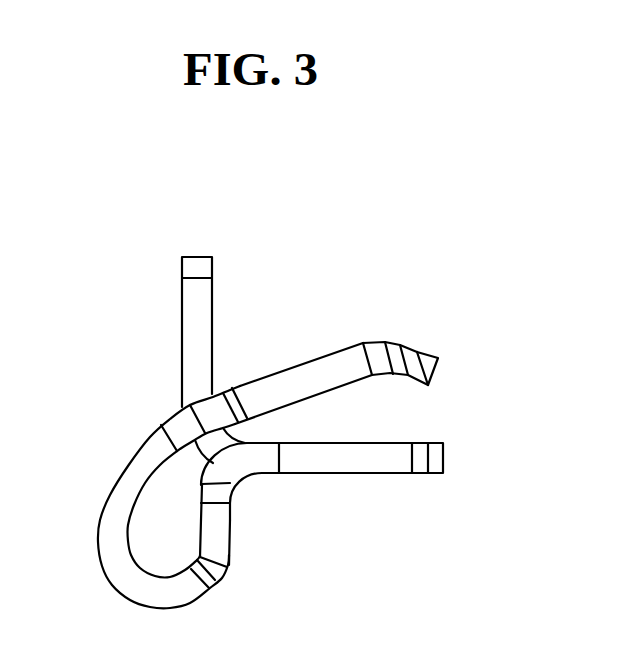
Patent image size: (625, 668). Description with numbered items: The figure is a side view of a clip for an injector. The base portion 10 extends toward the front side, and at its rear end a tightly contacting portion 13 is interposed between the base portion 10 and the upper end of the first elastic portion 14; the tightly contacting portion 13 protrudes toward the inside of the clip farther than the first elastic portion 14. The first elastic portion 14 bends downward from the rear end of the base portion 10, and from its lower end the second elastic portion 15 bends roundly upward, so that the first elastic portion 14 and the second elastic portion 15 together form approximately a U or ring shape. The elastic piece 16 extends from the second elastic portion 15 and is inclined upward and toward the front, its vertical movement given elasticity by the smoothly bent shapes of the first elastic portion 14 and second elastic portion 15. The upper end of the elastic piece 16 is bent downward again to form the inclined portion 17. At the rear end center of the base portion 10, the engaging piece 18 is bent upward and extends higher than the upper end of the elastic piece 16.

The base portion 10 is at (358, 460).
The tightly contacting portion 13 is at (222, 497).
The first elastic portion 14 is at (218, 542).
The second elastic portion 15 is at (123, 484).
The elastic piece 16 is at (300, 382).
The inclined portion 17 is at (403, 342).
The engaging piece 18 is at (181, 343).